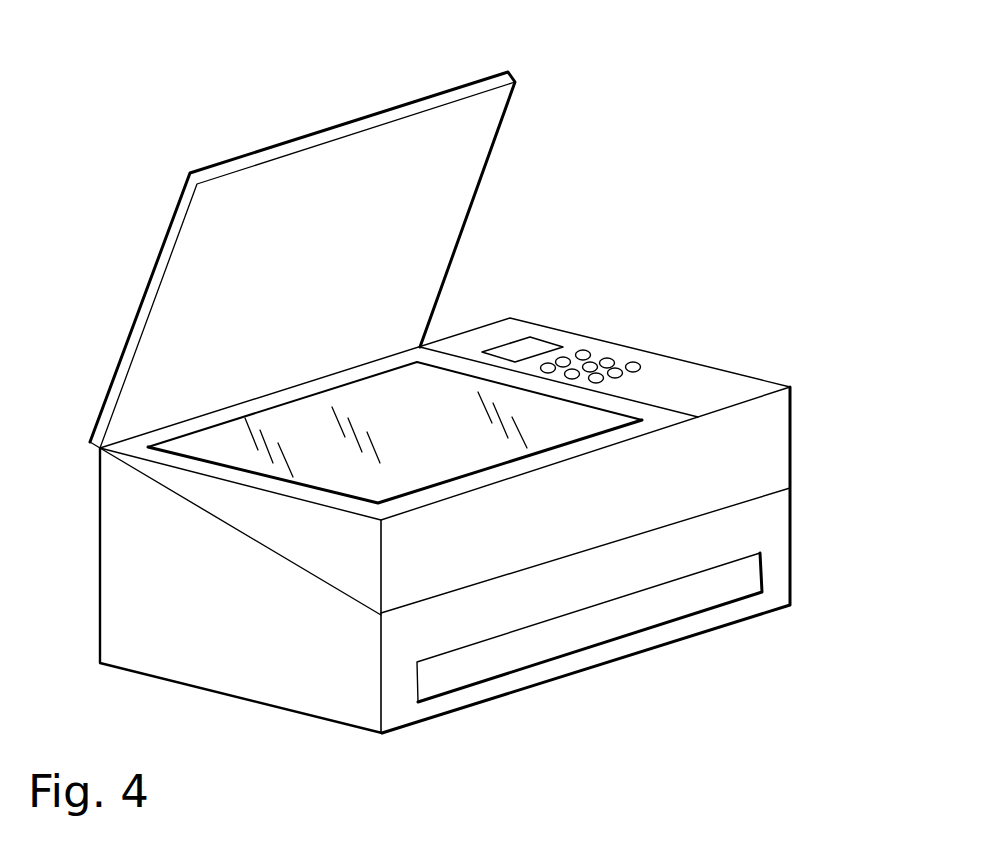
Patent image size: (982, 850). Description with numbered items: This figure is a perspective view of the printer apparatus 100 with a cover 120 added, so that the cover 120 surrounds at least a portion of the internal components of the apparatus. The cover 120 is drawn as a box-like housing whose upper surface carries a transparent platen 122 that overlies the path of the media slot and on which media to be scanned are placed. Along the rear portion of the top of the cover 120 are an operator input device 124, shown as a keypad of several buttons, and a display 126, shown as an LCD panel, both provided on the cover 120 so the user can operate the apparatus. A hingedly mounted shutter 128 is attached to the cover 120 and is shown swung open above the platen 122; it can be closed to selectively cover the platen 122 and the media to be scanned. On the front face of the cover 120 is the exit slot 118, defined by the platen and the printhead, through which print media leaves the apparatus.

The printer apparatus 100 is at (494, 381).
The exit slot 118 is at (605, 613).
The cover 120 is at (499, 493).
The transparent platen 122 is at (438, 420).
The operator input device 124 is at (632, 357).
The display 126 is at (530, 347).
The shutter 128 is at (413, 173).